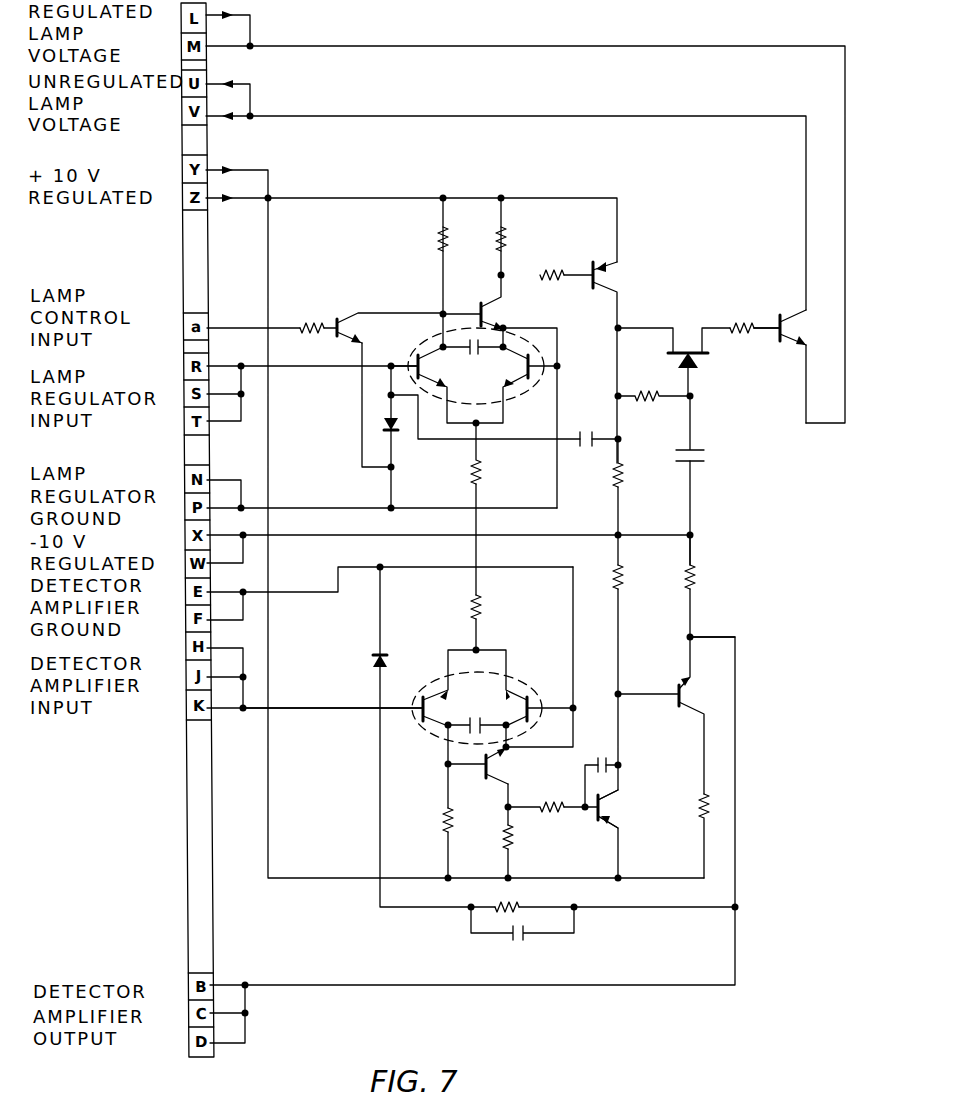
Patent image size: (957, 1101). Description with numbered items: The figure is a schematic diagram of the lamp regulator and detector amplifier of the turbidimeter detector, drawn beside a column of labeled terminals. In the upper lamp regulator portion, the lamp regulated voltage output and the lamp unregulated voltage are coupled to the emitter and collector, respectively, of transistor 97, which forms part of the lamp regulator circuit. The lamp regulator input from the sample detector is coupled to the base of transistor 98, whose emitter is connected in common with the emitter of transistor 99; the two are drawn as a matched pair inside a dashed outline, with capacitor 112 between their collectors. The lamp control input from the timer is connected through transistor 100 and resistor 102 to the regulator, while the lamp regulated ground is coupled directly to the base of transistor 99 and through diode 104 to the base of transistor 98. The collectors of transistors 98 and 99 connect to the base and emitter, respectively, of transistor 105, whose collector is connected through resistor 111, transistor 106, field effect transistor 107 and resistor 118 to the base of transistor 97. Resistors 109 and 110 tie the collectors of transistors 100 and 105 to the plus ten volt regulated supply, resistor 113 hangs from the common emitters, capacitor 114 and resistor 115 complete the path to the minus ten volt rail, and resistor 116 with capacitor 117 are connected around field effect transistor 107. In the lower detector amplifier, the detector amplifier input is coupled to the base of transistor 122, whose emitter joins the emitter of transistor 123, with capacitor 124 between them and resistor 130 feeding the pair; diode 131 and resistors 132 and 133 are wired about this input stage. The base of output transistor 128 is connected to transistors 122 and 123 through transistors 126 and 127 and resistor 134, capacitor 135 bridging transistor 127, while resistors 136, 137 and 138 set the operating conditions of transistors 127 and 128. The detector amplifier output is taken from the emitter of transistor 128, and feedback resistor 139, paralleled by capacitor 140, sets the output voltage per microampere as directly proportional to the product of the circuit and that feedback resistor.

The transistor 97 is at (788, 314).
The transistor 98 is at (429, 363).
The transistor 99 is at (519, 394).
The transistor 100 is at (344, 318).
The resistor 102 is at (309, 321).
The diode 104 is at (397, 434).
The transistor 105 is at (482, 300).
The transistor 106 is at (600, 280).
The field effect transistor 107 is at (700, 356).
The resistor 109 is at (438, 243).
The resistor 110 is at (520, 249).
The resistor 111 is at (544, 272).
The capacitor 112 is at (484, 338).
The resistor 113 is at (480, 470).
The capacitor 114 is at (586, 436).
The resistor 115 is at (628, 480).
The resistor 116 is at (641, 399).
The capacitor 117 is at (694, 457).
The resistor 118 is at (749, 319).
The transistor 122 is at (426, 694).
The transistor 123 is at (534, 694).
The capacitor 124 is at (476, 720).
The transistor 126 is at (482, 775).
The transistor 127 is at (596, 828).
The transistor 128 is at (687, 672).
The resistor 130 is at (484, 608).
The diode 131 is at (384, 659).
The resistor 132 is at (440, 834).
The resistor 133 is at (503, 847).
The resistor 134 is at (561, 826).
The capacitor 135 is at (601, 760).
The resistor 136 is at (698, 798).
The resistor 137 is at (625, 584).
The resistor 138 is at (704, 583).
The feedback resistor 139 is at (521, 905).
The capacitor 140 is at (527, 948).